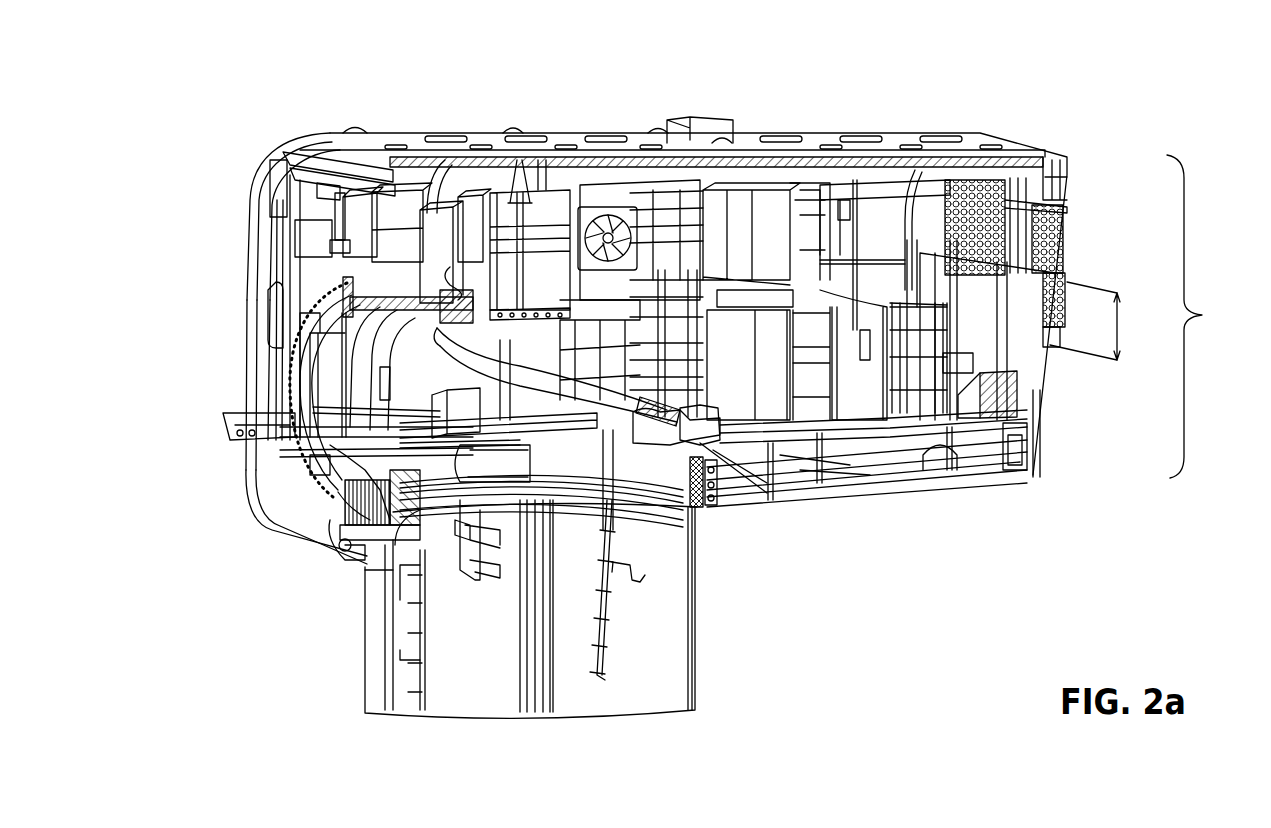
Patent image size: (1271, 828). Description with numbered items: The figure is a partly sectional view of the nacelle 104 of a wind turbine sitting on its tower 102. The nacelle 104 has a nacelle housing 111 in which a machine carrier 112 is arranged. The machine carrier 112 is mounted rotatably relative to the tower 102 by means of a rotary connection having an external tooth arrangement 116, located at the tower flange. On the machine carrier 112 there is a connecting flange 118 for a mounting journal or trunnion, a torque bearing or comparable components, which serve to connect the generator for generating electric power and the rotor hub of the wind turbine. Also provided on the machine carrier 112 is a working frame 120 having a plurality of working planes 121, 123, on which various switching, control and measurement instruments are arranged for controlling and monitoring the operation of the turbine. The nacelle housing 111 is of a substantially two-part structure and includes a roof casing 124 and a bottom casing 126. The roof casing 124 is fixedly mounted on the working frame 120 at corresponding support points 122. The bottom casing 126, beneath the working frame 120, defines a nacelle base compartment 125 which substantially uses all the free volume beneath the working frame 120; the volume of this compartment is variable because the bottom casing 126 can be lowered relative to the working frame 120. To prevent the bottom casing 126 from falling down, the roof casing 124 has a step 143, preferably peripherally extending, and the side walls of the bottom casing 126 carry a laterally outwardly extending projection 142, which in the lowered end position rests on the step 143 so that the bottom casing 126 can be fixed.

The tower 102 is at (695, 637).
The nacelle 104 is at (878, 98).
The nacelle housing 111 is at (1204, 316).
The machine carrier 112 is at (400, 410).
The external tooth arrangement 116 is at (340, 513).
The connecting flange 118 is at (320, 467).
The working frame 120 is at (277, 337).
The working plane 121 is at (218, 358).
The support points 122 is at (303, 152).
The working plane 123 is at (222, 248).
The roof casing 124 is at (254, 188).
The nacelle base compartment 125 is at (848, 450).
The bottom casing 126 is at (258, 522).
The projection 142 is at (1060, 273).
The step 143 is at (1050, 347).